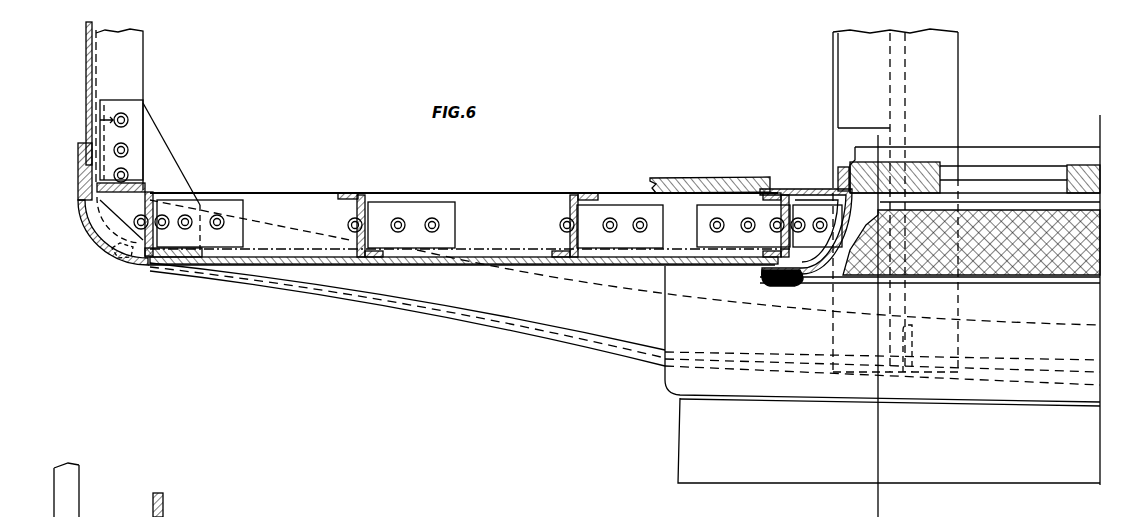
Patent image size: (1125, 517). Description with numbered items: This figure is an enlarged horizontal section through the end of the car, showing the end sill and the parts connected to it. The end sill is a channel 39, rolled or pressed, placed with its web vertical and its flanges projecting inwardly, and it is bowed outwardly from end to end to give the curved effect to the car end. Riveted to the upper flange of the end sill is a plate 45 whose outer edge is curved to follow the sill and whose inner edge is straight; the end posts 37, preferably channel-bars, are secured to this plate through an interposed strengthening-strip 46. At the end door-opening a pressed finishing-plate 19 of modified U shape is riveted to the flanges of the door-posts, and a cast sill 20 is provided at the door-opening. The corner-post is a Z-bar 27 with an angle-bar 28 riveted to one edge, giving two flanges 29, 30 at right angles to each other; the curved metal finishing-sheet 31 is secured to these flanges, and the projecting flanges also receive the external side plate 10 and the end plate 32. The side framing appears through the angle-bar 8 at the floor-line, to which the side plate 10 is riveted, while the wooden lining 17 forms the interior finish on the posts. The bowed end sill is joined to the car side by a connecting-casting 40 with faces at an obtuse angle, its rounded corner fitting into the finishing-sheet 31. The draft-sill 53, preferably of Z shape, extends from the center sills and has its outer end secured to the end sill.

The angle-bar 8 is at (125, 77).
The metal plate 10 is at (86, 68).
The wooden lining 17 is at (697, 187).
The pressed-metal plate 19 is at (812, 272).
The sill 20 is at (1013, 260).
The Z-bar 27 is at (150, 192).
The angle-bar 28 is at (82, 206).
The flange 29 is at (78, 167).
The flange 30 is at (172, 263).
The curved metal finishing-sheet 31 is at (97, 243).
The end plate 32 is at (427, 262).
The end post 37 is at (350, 193).
The end sill channel 39 is at (550, 348).
The connecting-casting 40 is at (157, 153).
The plate 45 is at (477, 310).
The strengthening-strip 46 is at (283, 205).
The draft-sill 53 is at (947, 97).